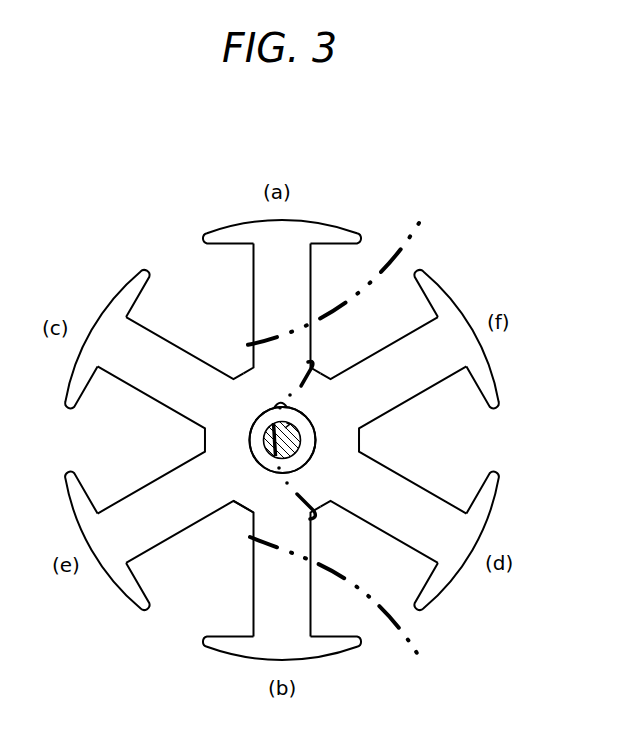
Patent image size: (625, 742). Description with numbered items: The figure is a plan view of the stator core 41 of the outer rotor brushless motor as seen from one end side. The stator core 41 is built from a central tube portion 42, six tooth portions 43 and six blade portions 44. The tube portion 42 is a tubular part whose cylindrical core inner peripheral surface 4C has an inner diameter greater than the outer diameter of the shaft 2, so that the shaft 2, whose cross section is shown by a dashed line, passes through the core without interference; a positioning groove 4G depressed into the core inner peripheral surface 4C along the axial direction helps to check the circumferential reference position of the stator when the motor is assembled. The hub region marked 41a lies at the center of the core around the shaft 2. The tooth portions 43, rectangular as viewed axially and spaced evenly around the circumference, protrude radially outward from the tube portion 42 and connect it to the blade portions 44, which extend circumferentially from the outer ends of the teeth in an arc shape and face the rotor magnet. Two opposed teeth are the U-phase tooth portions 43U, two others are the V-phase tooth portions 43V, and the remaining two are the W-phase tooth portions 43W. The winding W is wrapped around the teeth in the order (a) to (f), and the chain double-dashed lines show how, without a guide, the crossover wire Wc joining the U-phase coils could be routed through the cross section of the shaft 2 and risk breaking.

The stator core 41 is at (455, 272).
The central hub portion 41a is at (243, 418).
The tube portion 42 is at (245, 505).
The tooth portions 43 is at (282, 438).
The U-phase tooth portions 43U is at (257, 260).
The V-phase tooth portions 43V is at (158, 393).
The W-phase tooth portions 43W is at (435, 428).
The blade portions 44 is at (236, 228).
The core inner peripheral surface 4C is at (249, 440).
The positioning groove 4G is at (278, 402).
The shaft 2 is at (315, 438).
The winding W is at (401, 246).
The crossover wire Wc is at (292, 396).